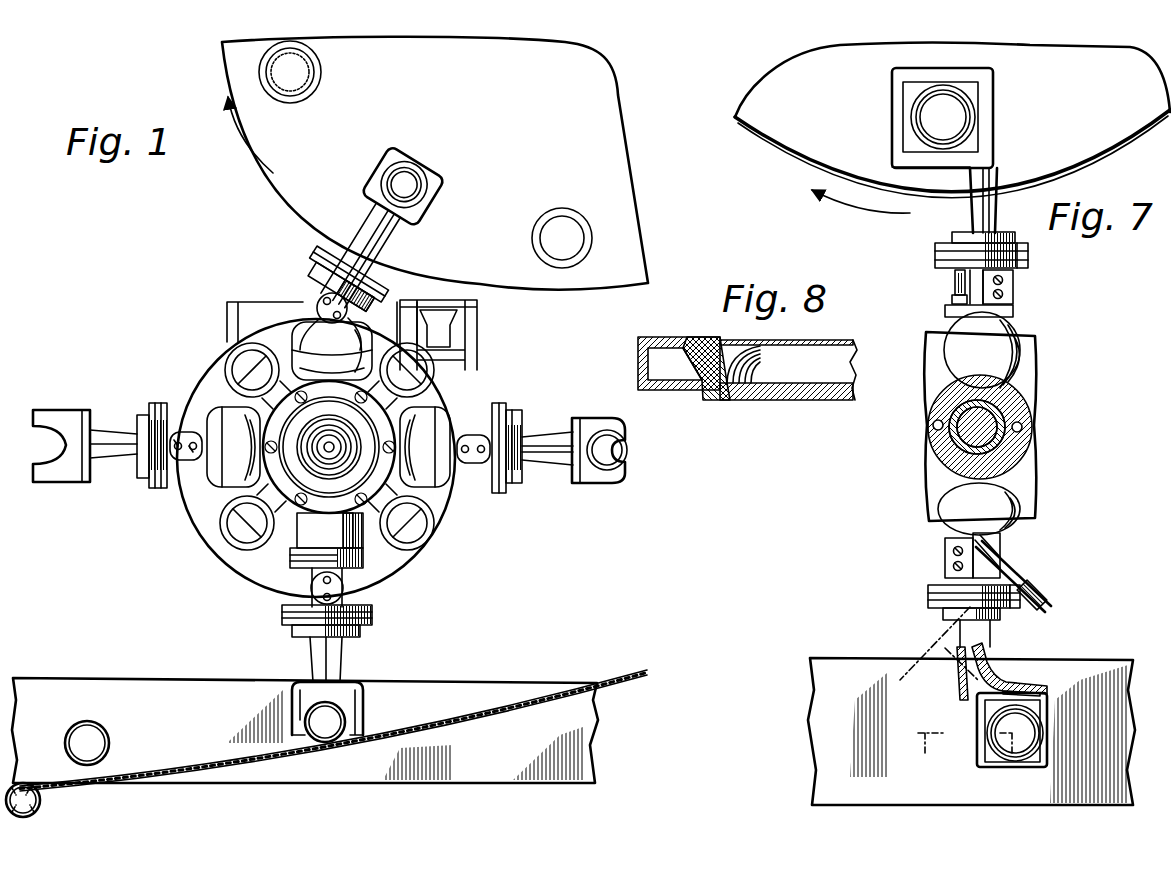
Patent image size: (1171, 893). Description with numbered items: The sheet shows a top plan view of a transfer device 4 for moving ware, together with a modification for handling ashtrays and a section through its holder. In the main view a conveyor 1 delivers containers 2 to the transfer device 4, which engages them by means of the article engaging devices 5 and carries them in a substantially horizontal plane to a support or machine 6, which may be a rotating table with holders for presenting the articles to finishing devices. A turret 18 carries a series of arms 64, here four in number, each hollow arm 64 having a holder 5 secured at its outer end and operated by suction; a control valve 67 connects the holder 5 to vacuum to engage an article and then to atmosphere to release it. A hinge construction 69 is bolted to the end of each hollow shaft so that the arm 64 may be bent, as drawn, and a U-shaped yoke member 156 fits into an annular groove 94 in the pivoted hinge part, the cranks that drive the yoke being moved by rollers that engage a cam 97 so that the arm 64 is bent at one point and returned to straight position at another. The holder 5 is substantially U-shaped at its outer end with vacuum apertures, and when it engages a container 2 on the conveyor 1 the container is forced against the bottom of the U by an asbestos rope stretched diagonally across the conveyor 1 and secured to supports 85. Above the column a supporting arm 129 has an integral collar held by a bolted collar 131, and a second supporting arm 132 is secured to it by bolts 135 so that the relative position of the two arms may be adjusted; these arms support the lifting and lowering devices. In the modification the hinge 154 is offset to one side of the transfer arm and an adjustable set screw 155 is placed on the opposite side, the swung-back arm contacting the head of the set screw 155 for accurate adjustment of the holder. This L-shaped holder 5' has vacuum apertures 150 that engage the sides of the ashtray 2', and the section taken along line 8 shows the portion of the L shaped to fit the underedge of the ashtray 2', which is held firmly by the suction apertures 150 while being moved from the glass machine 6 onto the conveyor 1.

In FIG. 1, the conveyor 1 is at (432, 777).
In FIG. 7, the conveyor 1 is at (972, 793).
In FIG. 1, the container 2 is at (205, 760).
In FIG. 8, the ashtray 2' is at (788, 391).
In FIG. 7, the ashtray 2' is at (998, 417).
In FIG. 1, the transfer device 4 is at (197, 547).
In FIG. 1, the article engaging device 5 is at (349, 692).
In FIG. 7, the holder 5' is at (977, 653).
In FIG. 1, the machine 6 is at (618, 163).
In FIG. 7, the machine 6 is at (1112, 140).
In FIG. 7, the section line 8 is at (964, 740).
In FIG. 7, the turret 18 is at (1042, 353).
In FIG. 1, the arm 64 is at (107, 428).
In FIG. 7, the arm 64 is at (965, 217).
In FIG. 1, the control valve 67 is at (222, 360).
In FIG. 1, the hinge construction 69 is at (188, 428).
In FIG. 1, the support 85 is at (42, 806).
In FIG. 1, the annular groove 94 is at (503, 407).
In FIG. 7, the annular groove 94 is at (928, 595).
In FIG. 1, the cam 97 is at (462, 517).
In FIG. 1, the supporting arm 129 is at (305, 540).
In FIG. 1, the collar 131 is at (278, 482).
In FIG. 1, the second supporting arm 132 is at (315, 302).
In FIG. 1, the bolts 135 is at (233, 493).
In FIG. 8, the vacuum apertures 150 is at (673, 373).
In FIG. 7, the vacuum apertures 150 is at (1020, 687).
In FIG. 7, the hinge 154 is at (1013, 290).
In FIG. 7, the set screw 155 is at (955, 285).
In FIG. 1, the yoke member 156 is at (155, 403).
In FIG. 7, the yoke member 156 is at (1030, 258).